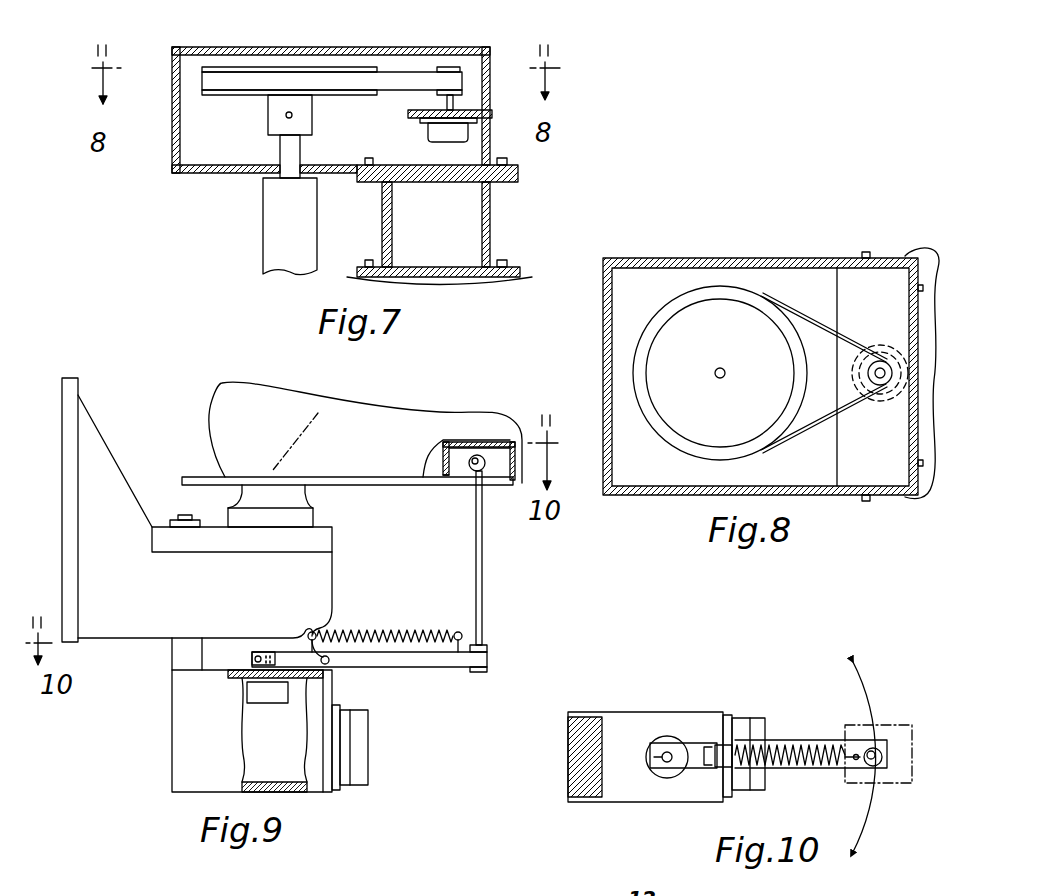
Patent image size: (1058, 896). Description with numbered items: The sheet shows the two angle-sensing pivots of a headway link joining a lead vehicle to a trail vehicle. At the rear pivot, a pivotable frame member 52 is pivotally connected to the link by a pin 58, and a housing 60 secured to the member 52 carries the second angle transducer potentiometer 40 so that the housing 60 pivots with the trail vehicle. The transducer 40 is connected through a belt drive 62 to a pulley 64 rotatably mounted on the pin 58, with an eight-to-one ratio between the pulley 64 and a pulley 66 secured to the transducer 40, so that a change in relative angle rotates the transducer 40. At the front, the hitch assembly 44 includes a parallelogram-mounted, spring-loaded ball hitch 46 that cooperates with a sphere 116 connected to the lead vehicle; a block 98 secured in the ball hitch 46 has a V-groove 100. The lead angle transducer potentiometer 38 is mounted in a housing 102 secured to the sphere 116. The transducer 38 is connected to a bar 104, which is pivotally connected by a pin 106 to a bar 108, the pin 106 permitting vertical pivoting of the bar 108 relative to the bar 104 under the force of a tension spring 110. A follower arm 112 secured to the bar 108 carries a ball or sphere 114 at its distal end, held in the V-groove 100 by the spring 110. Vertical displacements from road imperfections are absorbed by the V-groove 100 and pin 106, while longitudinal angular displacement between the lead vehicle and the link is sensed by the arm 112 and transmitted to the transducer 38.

In FIG. 9, the angle transducer potentiometer 38 is at (290, 692).
In FIG. 10, the angle transducer potentiometer 38 is at (670, 779).
In FIG. 7, the second angle transducer potentiometer 40 is at (460, 136).
In FIG. 8, the second angle transducer potentiometer 40 is at (882, 346).
In FIG. 9, the hitch assembly 44 is at (176, 460).
In FIG. 9, the ball hitch 46 is at (365, 430).
In FIG. 7, the pivotable frame member 52 is at (499, 283).
In FIG. 7, the pin 58 is at (270, 230).
In FIG. 8, the pin 58 is at (720, 379).
In FIG. 7, the housing 60 is at (174, 162).
In FIG. 8, the housing 60 is at (763, 262).
In FIG. 7, the belt drive 62 is at (390, 73).
In FIG. 8, the belt drive 62 is at (823, 333).
In FIG. 7, the pulley 64 is at (243, 70).
In FIG. 8, the pulley 64 is at (768, 448).
In FIG. 7, the pulley 66 is at (457, 66).
In FIG. 8, the pulley 66 is at (886, 386).
In FIG. 9, the block 98 is at (500, 470).
In FIG. 10, the block 98 is at (893, 783).
In FIG. 9, the V-groove 100 is at (471, 471).
In FIG. 9, the housing 102 is at (185, 697).
In FIG. 10, the housing 102 is at (620, 722).
In FIG. 9, the bar 104 is at (278, 640).
In FIG. 10, the bar 104 is at (695, 745).
In FIG. 9, the pin 106 is at (327, 656).
In FIG. 10, the pin 106 is at (723, 745).
In FIG. 9, the bar 108 is at (454, 666).
In FIG. 10, the bar 108 is at (796, 740).
In FIG. 9, the tension spring 110 is at (403, 628).
In FIG. 10, the tension spring 110 is at (800, 766).
In FIG. 9, the follower arm 112 is at (484, 607).
In FIG. 9, the ball or sphere 114 is at (481, 455).
In FIG. 10, the ball or sphere 114 is at (880, 751).
In FIG. 9, the sphere 116 is at (312, 516).